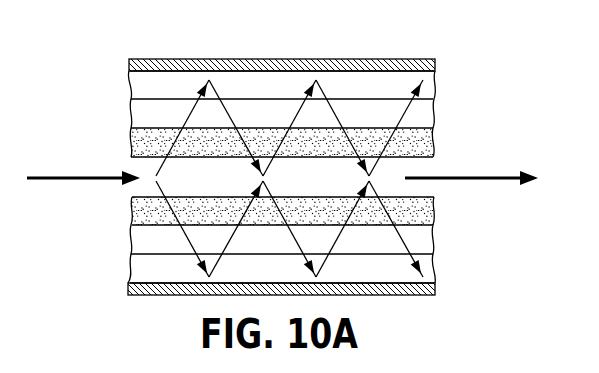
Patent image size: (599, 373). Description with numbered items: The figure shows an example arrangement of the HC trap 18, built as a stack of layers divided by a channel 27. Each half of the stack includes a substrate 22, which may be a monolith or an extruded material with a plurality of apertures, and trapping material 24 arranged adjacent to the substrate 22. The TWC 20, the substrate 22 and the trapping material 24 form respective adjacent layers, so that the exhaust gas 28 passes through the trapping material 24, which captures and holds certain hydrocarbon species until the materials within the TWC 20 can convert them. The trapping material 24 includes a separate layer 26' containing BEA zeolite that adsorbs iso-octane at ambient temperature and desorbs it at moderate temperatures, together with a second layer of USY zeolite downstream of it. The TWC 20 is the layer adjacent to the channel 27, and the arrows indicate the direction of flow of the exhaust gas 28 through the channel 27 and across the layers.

The HC trap 18 is at (115, 225).
The TWC 20 is at (143, 142).
The substrate 22 is at (263, 59).
The trapping material 24 is at (142, 115).
The separate layer 26' is at (291, 195).
The channel 27 is at (308, 189).
The exhaust gas 28 is at (82, 176).